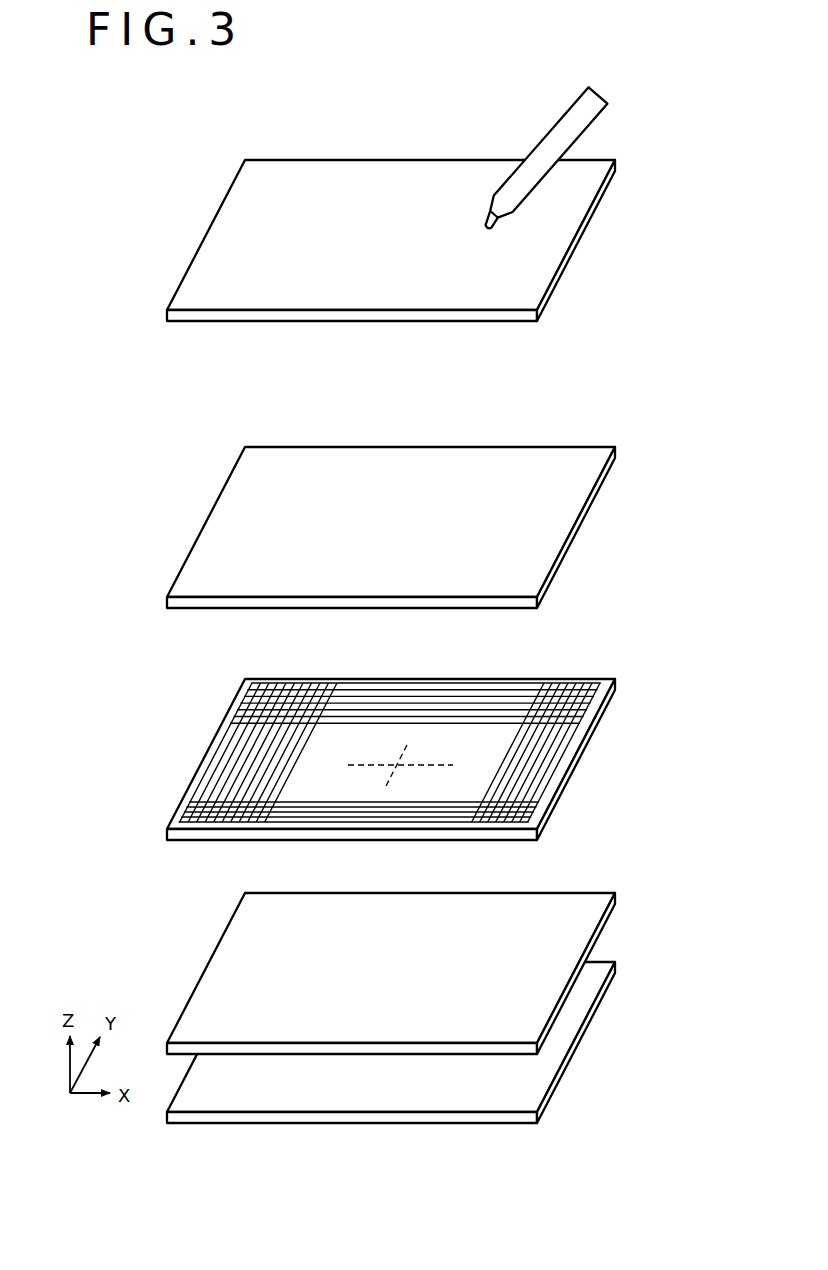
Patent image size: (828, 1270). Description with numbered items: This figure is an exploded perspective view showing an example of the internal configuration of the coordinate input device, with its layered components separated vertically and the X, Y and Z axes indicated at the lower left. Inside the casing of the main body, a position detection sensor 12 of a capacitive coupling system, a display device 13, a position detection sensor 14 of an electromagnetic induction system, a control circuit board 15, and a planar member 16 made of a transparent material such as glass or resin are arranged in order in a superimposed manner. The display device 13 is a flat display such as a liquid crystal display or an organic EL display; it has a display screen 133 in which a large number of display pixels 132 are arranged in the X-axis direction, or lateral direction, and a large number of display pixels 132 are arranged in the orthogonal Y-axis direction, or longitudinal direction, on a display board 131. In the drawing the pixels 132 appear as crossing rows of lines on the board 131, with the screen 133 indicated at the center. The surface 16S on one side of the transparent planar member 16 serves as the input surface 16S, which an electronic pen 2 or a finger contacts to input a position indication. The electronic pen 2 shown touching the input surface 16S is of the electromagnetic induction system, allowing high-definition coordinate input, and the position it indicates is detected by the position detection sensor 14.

The electronic pen 2 is at (572, 123).
The position detection sensor 12 is at (584, 528).
The display device 13 is at (416, 732).
The display board 131 is at (558, 781).
The display pixels 132 is at (263, 689).
The display screen 133 is at (381, 740).
The position detection sensor 14 is at (596, 905).
The control circuit board 15 is at (587, 1015).
The planar member 16 is at (409, 209).
The input surface 16S is at (350, 175).